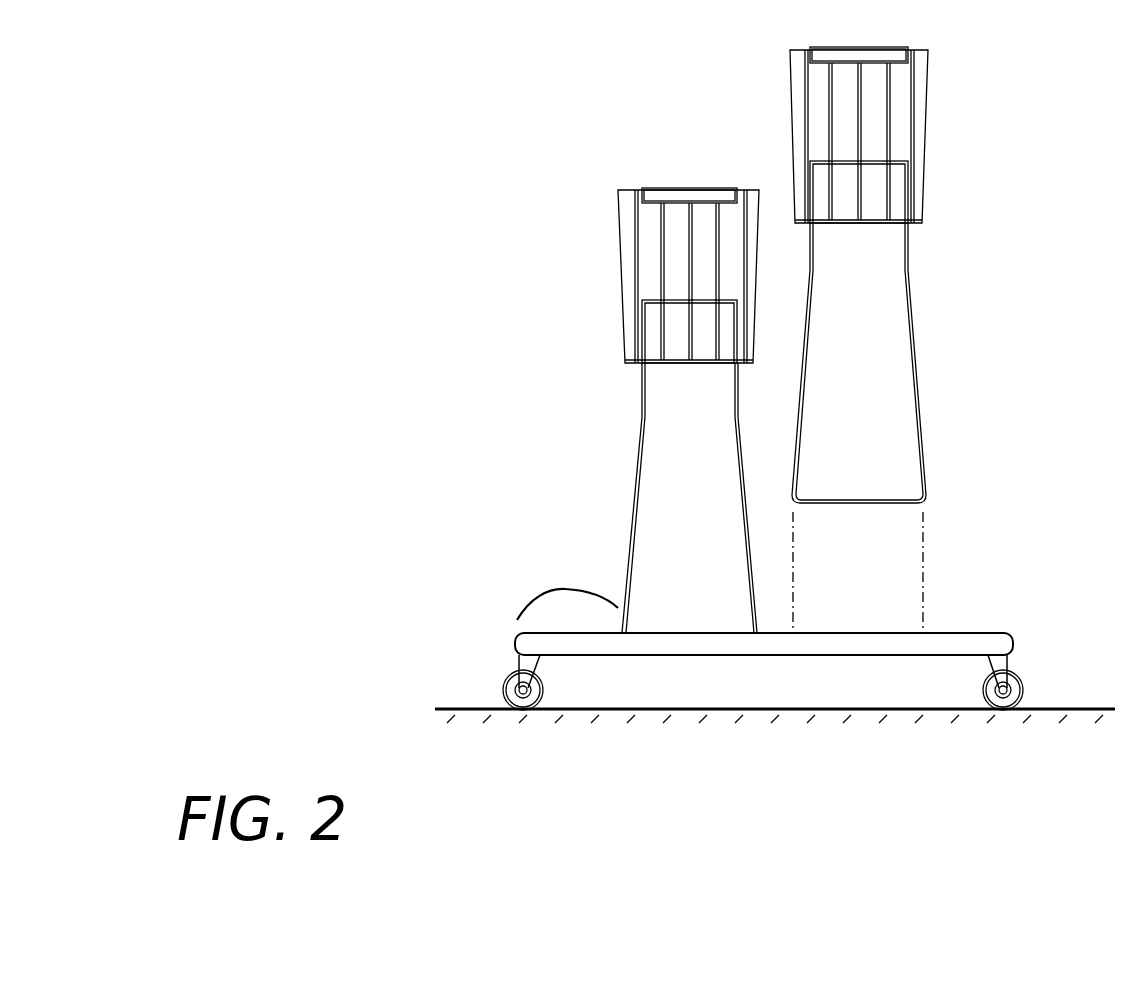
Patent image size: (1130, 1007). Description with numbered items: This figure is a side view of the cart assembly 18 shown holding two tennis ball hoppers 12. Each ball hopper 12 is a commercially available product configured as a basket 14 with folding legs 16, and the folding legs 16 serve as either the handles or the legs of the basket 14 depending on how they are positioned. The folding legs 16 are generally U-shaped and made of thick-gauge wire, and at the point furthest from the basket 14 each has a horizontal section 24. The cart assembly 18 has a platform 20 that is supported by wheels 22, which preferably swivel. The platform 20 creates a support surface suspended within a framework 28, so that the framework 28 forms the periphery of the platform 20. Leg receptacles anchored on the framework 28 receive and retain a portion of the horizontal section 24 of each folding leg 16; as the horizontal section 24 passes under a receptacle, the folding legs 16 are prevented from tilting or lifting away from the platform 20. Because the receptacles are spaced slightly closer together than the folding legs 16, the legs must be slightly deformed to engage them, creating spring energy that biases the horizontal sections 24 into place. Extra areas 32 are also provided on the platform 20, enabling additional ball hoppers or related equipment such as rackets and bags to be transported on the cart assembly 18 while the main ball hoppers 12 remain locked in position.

The ball hopper 12 is at (790, 125).
The basket 14 is at (627, 337).
The folding legs 16 is at (630, 537).
The cart assembly 18 is at (528, 646).
The platform 20 is at (1015, 638).
The wheels 22 is at (1008, 688).
The horizontal section 24 is at (852, 500).
The framework 28 is at (938, 645).
The extra areas 32 is at (562, 588).